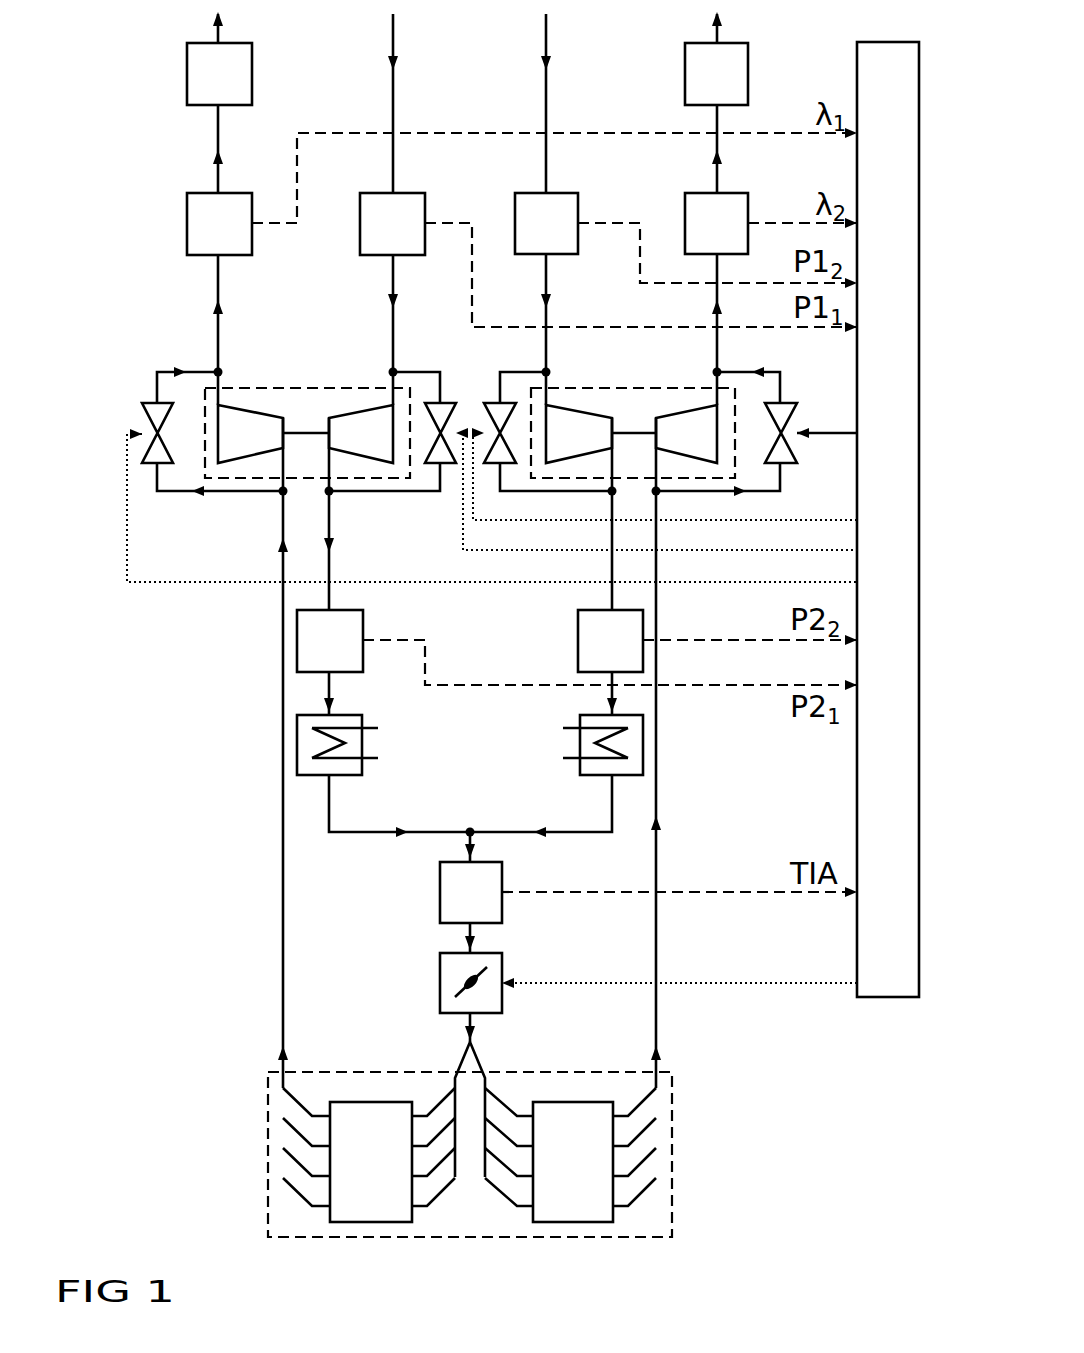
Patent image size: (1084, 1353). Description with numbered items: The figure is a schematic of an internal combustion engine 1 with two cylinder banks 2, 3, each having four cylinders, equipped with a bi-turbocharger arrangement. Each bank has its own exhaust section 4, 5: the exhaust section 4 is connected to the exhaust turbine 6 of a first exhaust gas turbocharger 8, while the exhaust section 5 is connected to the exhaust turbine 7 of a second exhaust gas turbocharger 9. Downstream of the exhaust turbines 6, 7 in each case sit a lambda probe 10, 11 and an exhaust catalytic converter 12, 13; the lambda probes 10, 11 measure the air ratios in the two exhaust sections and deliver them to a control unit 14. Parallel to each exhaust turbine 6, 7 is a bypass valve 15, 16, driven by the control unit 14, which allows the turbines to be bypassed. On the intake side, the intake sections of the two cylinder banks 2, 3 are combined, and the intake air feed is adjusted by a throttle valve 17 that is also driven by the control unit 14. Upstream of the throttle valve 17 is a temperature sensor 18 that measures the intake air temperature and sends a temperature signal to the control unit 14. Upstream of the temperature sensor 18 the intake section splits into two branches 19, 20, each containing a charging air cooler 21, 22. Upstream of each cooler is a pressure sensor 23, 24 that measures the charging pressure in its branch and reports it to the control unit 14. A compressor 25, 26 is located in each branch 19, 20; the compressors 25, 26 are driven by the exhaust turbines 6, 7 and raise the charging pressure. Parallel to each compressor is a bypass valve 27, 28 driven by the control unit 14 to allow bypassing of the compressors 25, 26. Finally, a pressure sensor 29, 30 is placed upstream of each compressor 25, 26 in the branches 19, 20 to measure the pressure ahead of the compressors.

The internal combustion engine 1 is at (672, 1162).
The cylinder bank 2 is at (368, 1222).
The cylinder bank 3 is at (570, 1222).
The exhaust section 4 is at (283, 902).
The exhaust section 5 is at (656, 1000).
The exhaust turbine 6 is at (239, 417).
The exhaust turbine 7 is at (708, 418).
The exhaust gas turbocharger 8 is at (262, 478).
The exhaust gas turbocharger 9 is at (617, 385).
The lambda probe 10 is at (187, 226).
The lambda probe 11 is at (738, 193).
The exhaust catalytic converter 12 is at (239, 43).
The exhaust catalytic converter 13 is at (738, 43).
The control unit 14 is at (857, 760).
The bypass valve 15 is at (140, 403).
The bypass valve 16 is at (792, 405).
The throttle valve 17 is at (440, 978).
The temperature sensor 18 is at (440, 890).
The branch 19 is at (329, 690).
The branch 20 is at (612, 695).
The charging air cooler 21 is at (358, 775).
The charging air cooler 22 is at (580, 762).
The pressure sensor 23 is at (366, 622).
The pressure sensor 24 is at (578, 660).
The compressor 25 is at (376, 420).
The compressor 26 is at (583, 435).
The bypass valve 27 is at (436, 466).
The bypass valve 28 is at (488, 403).
The pressure sensor 29 is at (425, 197).
The pressure sensor 30 is at (578, 208).